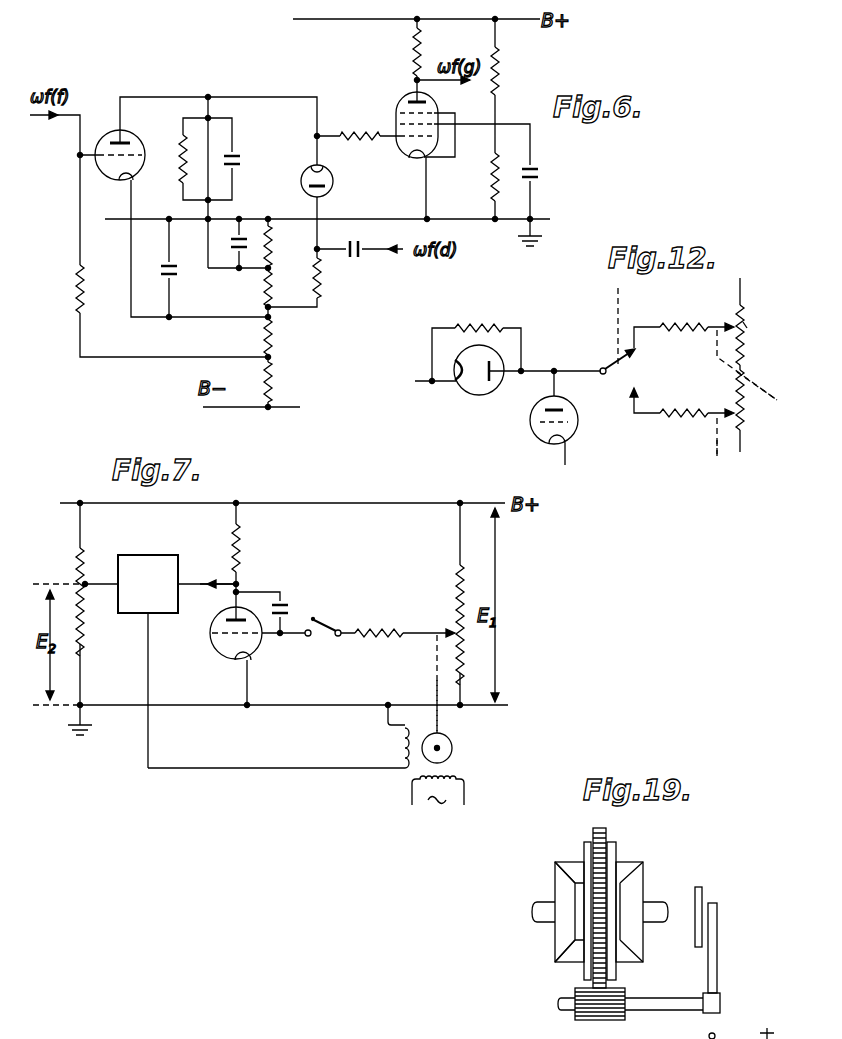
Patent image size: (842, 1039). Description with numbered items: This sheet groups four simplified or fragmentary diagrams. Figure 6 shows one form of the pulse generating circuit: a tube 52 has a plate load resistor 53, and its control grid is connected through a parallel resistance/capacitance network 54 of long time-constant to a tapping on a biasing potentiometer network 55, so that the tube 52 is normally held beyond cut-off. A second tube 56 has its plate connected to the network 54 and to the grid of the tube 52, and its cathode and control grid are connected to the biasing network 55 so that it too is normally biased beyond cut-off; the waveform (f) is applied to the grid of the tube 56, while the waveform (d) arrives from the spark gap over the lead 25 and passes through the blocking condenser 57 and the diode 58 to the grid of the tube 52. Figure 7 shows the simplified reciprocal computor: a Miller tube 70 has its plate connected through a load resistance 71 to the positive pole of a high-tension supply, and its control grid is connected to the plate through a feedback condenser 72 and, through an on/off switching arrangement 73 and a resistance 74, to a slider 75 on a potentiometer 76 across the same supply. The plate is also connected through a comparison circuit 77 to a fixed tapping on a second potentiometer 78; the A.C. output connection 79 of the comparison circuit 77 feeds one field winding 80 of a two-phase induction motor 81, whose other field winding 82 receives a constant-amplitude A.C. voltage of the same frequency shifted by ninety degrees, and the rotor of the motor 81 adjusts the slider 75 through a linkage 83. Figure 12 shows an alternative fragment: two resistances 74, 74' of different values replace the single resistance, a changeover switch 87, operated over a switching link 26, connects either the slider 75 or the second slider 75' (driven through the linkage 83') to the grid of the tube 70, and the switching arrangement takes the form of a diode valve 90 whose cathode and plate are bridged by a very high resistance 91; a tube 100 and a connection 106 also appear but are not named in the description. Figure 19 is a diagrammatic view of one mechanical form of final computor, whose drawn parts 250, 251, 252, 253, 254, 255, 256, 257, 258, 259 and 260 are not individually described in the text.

In FIG. 6, the second tube 56 is at (139, 139).
In FIG. 6, the parallel resistance/capacitance network 54 is at (209, 159).
In FIG. 6, the plate load resistor 53 is at (434, 52).
In FIG. 6, the tube 52 is at (397, 109).
In FIG. 6, the diode 58 is at (333, 184).
In FIG. 6, the blocking condenser 57 is at (337, 269).
In FIG. 6, the lead 25 is at (377, 252).
In FIG. 6, the biasing potentiometer network 55 is at (264, 306).
In FIG. 12, the very high resistance 91 is at (479, 316).
In FIG. 12, the diode valve 90 is at (475, 380).
In FIG. 12, the triode tube 100 is at (529, 437).
In FIG. 12, the changeover switch 87 is at (628, 362).
In FIG. 12, the switching link 26 is at (612, 304).
In FIG. 12, the resistance 74' is at (675, 310).
In FIG. 12, the resistance 74 is at (675, 428).
In FIG. 7, the resistance 74 is at (379, 616).
In FIG. 12, the second slider 75' is at (723, 324).
In FIG. 12, the slider 75 is at (723, 411).
In FIG. 7, the slider 75 is at (443, 604).
In FIG. 12, the potentiometer 76 is at (745, 326).
In FIG. 12, the linkage 83' is at (764, 378).
In FIG. 12, the linkage 83 is at (700, 458).
In FIG. 7, the linkage 83 is at (416, 696).
In FIG. 7, the second potentiometer 78 is at (76, 561).
In FIG. 7, the comparison circuit 77 is at (137, 555).
In FIG. 7, the output lead 106 is at (209, 568).
In FIG. 7, the load resistance 71 is at (251, 561).
In FIG. 7, the feedback condenser 72 is at (288, 603).
In FIG. 7, the Miller tube 70 is at (214, 650).
In FIG. 7, the on/off switching arrangement 73 is at (323, 642).
In FIG. 7, the A.C. output connection 79 is at (294, 736).
In FIG. 7, the field winding 80 is at (384, 748).
In FIG. 7, the two-phase induction motor 81 is at (454, 748).
In FIG. 7, the field winding 82 is at (455, 790).
In FIG. 19, the rack 257 is at (597, 826).
In FIG. 19, the rack guide 256 is at (612, 842).
In FIG. 19, the magnet core 250 is at (567, 935).
In FIG. 19, the pole piece 251 is at (633, 940).
In FIG. 19, the pole piece 254 is at (575, 862).
In FIG. 19, the pole piece 255 is at (578, 955).
In FIG. 19, the shaft 252 is at (545, 902).
In FIG. 19, the shaft 253 is at (653, 903).
In FIG. 19, the lever arm 260 is at (717, 903).
In FIG. 19, the pinion gear 258 is at (578, 1015).
In FIG. 19, the pinion shaft 259 is at (655, 1003).